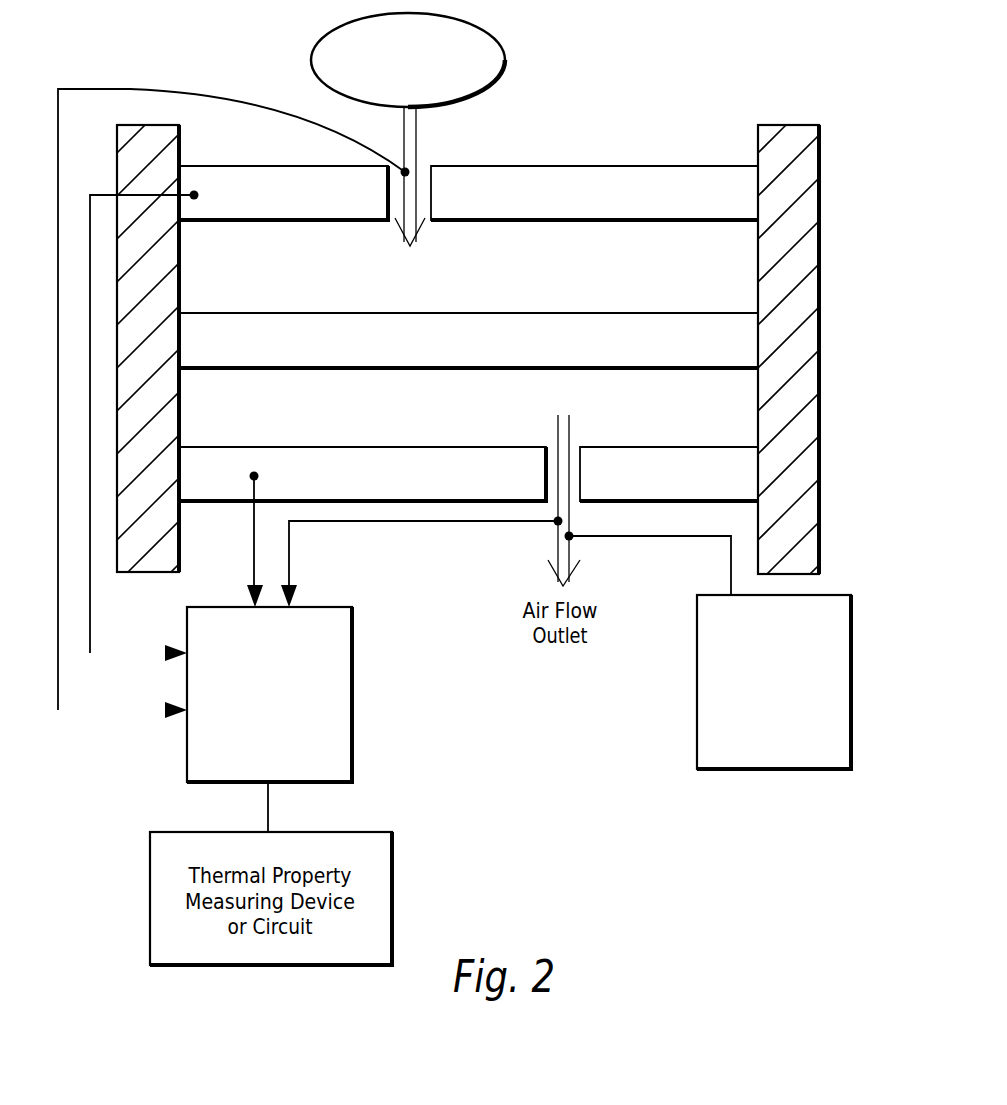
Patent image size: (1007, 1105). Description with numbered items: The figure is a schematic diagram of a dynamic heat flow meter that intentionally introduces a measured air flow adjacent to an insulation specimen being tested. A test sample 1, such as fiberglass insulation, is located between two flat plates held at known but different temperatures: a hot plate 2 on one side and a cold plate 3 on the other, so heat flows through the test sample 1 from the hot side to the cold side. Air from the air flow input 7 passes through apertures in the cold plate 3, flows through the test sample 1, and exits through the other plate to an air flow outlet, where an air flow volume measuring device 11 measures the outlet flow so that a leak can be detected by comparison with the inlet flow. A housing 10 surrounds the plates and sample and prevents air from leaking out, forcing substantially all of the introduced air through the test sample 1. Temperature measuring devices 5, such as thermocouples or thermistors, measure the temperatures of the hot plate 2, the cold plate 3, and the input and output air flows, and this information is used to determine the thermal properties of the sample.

The test sample 1 is at (472, 313).
The hot plate 2 is at (380, 447).
The cold plate 3 is at (696, 173).
The temperature measuring device 5 is at (352, 680).
The air flow input 7 is at (498, 40).
The housing 10 is at (155, 125).
The air flow volume measuring device 11 is at (770, 769).